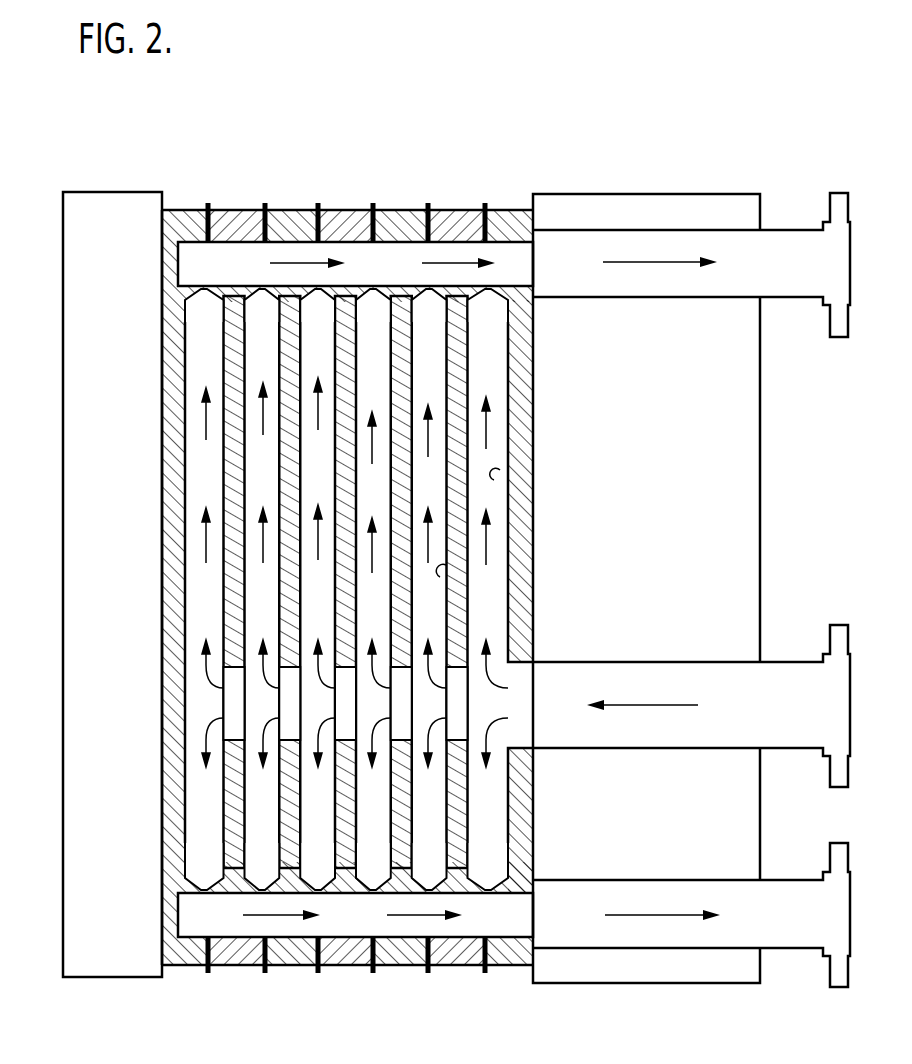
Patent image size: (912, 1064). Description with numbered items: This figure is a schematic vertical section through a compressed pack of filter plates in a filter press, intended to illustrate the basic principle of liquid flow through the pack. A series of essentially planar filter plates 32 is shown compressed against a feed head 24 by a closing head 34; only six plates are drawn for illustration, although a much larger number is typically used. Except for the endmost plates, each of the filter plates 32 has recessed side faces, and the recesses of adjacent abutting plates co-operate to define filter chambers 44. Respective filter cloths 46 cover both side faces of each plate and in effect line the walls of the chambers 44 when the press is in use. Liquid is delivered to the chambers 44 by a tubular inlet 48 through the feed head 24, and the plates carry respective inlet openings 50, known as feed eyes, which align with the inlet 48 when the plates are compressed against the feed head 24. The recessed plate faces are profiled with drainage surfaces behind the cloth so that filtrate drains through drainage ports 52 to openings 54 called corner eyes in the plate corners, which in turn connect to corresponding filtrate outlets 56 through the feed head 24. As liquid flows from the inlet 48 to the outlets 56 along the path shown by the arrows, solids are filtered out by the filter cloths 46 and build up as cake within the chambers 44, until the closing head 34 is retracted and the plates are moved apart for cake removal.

The feed head 24 is at (748, 570).
The filter plates 32 is at (312, 192).
The closing head 34 is at (88, 632).
The filter chambers 44 is at (433, 468).
The filter cloths 46 is at (440, 573).
The tubular inlet 48 is at (795, 660).
The inlet openings 50 is at (505, 690).
The drainage ports 52 is at (218, 296).
The openings 54 is at (243, 260).
The filtrate outlets 56 is at (790, 229).